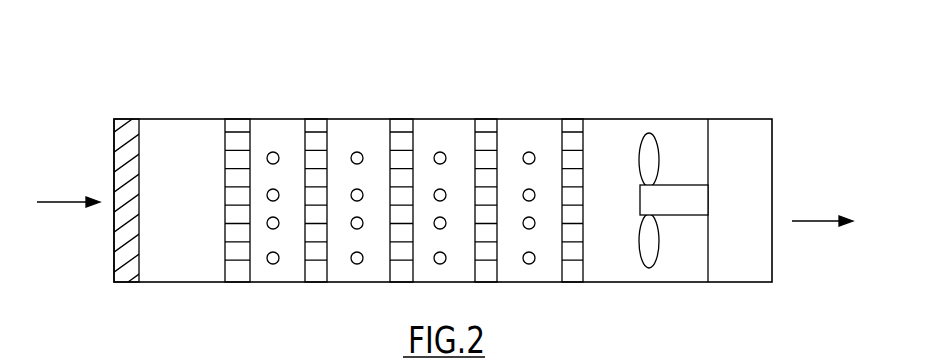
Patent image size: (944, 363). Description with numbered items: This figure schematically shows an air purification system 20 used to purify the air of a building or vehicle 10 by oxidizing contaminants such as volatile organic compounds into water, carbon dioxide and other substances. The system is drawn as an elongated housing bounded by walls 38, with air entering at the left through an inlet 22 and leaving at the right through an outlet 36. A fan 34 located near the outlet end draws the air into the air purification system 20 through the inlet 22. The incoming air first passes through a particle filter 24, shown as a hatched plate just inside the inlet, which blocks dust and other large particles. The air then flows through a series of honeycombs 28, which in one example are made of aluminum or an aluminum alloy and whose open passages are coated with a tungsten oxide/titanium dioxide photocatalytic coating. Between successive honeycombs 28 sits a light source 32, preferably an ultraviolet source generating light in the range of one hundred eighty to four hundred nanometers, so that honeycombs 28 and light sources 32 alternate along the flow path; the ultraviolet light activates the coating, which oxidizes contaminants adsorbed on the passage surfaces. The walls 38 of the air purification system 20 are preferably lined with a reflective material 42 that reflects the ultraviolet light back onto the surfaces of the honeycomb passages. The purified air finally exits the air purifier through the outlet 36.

The building or vehicle 10 is at (811, 45).
The air purification system 20 is at (640, 72).
The inlet 22 is at (114, 182).
The particle filter 24 is at (114, 150).
The honeycomb 28 is at (317, 123).
The light source 32 is at (357, 152).
The fan 34 is at (655, 141).
The outlet 36 is at (773, 197).
The walls 38 is at (528, 121).
The reflective material 42 is at (683, 277).